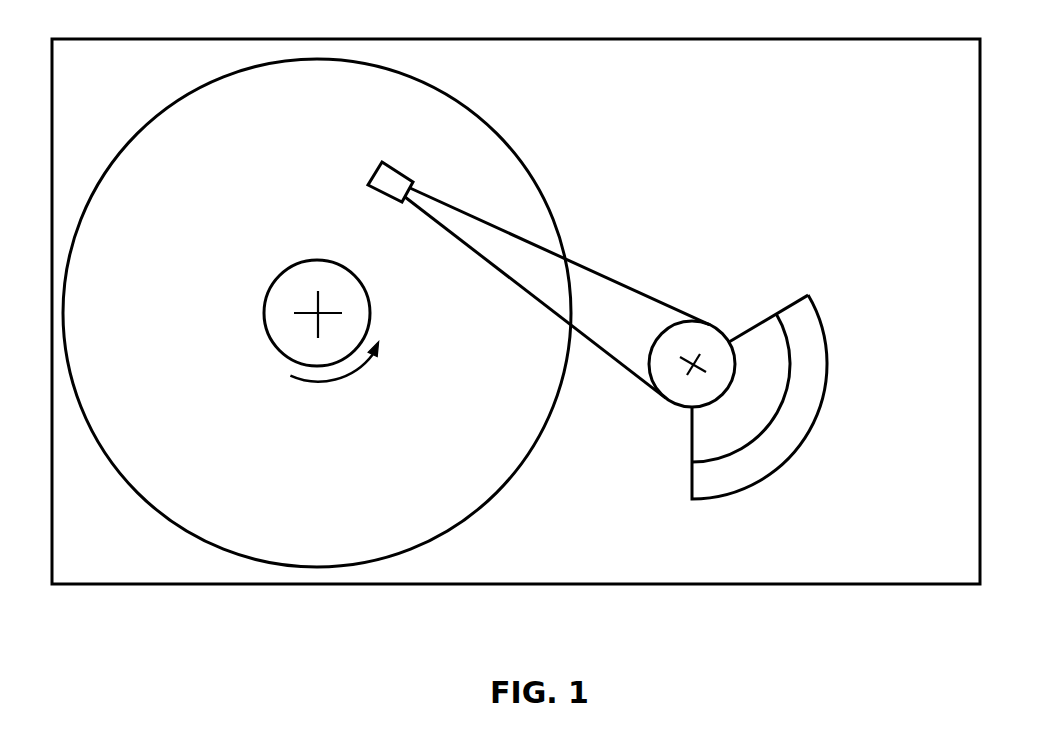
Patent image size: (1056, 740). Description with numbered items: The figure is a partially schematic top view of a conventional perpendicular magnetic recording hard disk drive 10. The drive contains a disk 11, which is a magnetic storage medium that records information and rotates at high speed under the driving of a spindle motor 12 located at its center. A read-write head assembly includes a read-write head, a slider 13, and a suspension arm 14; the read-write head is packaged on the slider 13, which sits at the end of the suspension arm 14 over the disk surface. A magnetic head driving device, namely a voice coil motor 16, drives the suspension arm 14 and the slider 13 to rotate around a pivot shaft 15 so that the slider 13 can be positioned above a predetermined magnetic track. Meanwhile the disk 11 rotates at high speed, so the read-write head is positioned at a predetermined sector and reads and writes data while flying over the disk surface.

The hard disk drive 10 is at (991, 162).
The disk 11 is at (486, 522).
The spindle motor 12 is at (259, 350).
The slider 13 is at (424, 173).
The suspension arm 14 is at (600, 257).
The pivot shaft 15 is at (701, 339).
The magnetic head driving device (voice coil motor) 16 is at (785, 444).